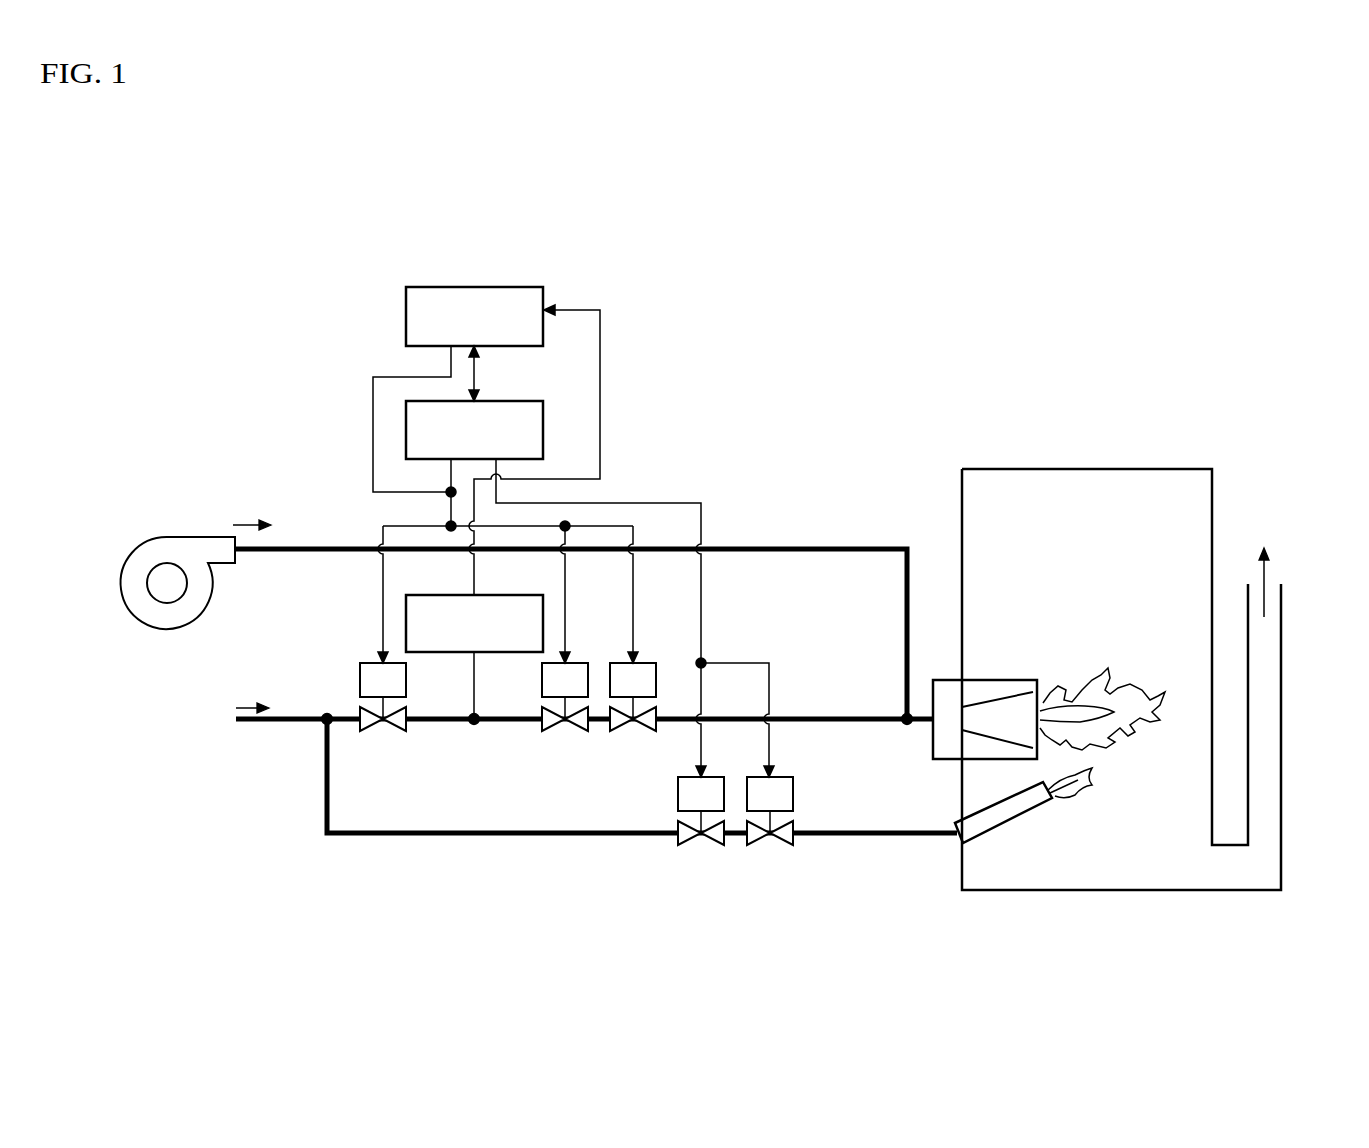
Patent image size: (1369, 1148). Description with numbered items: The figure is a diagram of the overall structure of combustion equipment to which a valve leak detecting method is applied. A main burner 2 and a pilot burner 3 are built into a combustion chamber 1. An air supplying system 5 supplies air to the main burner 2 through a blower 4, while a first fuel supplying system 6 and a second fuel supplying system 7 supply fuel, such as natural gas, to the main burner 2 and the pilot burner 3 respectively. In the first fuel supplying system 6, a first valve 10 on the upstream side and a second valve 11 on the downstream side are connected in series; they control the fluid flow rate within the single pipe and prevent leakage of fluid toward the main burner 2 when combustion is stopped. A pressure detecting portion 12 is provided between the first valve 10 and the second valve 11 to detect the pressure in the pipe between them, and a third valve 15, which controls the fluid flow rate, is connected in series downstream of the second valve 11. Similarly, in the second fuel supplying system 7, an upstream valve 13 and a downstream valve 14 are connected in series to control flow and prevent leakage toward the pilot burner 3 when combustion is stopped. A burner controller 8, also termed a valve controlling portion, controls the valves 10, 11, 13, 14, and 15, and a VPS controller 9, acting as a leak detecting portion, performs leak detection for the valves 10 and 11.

The combustion chamber 1 is at (1160, 469).
The main burner 2 is at (995, 680).
The pilot burner 3 is at (1022, 815).
The blower 4 is at (121, 583).
The air supplying system 5 is at (330, 547).
The first fuel supplying system 6 is at (840, 717).
The second fuel supplying system 7 is at (470, 831).
The burner controller 8 is at (512, 401).
The VPS controller 9 is at (512, 287).
The first valve 10 is at (360, 679).
The second valve 11 is at (580, 663).
The pressure detecting portion 12 is at (500, 594).
The valve 13 is at (678, 793).
The valve 14 is at (794, 793).
The third valve 15 is at (648, 663).